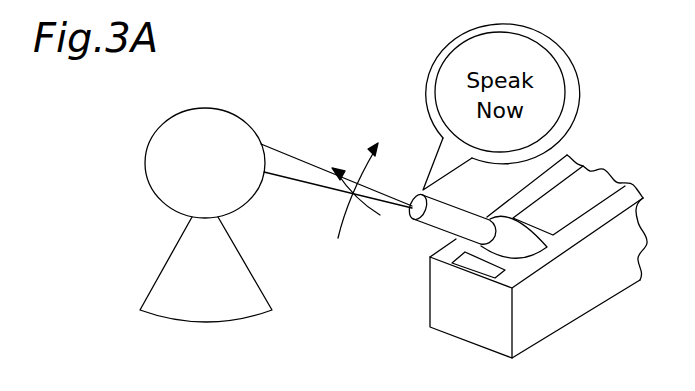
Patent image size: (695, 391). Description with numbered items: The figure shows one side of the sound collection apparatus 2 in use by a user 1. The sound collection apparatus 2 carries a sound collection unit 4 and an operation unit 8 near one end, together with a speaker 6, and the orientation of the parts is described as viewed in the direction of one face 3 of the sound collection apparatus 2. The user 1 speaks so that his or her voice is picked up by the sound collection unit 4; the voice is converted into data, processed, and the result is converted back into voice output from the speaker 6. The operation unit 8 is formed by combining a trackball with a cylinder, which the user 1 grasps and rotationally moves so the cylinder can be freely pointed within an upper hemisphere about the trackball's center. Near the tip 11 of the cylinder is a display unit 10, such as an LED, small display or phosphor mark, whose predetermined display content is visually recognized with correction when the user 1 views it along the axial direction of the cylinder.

The user 1 is at (158, 162).
The sound collection apparatus 2 is at (517, 242).
The one face of the sound collection apparatus 3 is at (445, 300).
The sound collection unit 4 is at (473, 263).
The speaker 6 is at (592, 183).
The operation unit 8 is at (467, 222).
The display unit 10 is at (412, 222).
The tip of the cylinder 11 is at (418, 194).